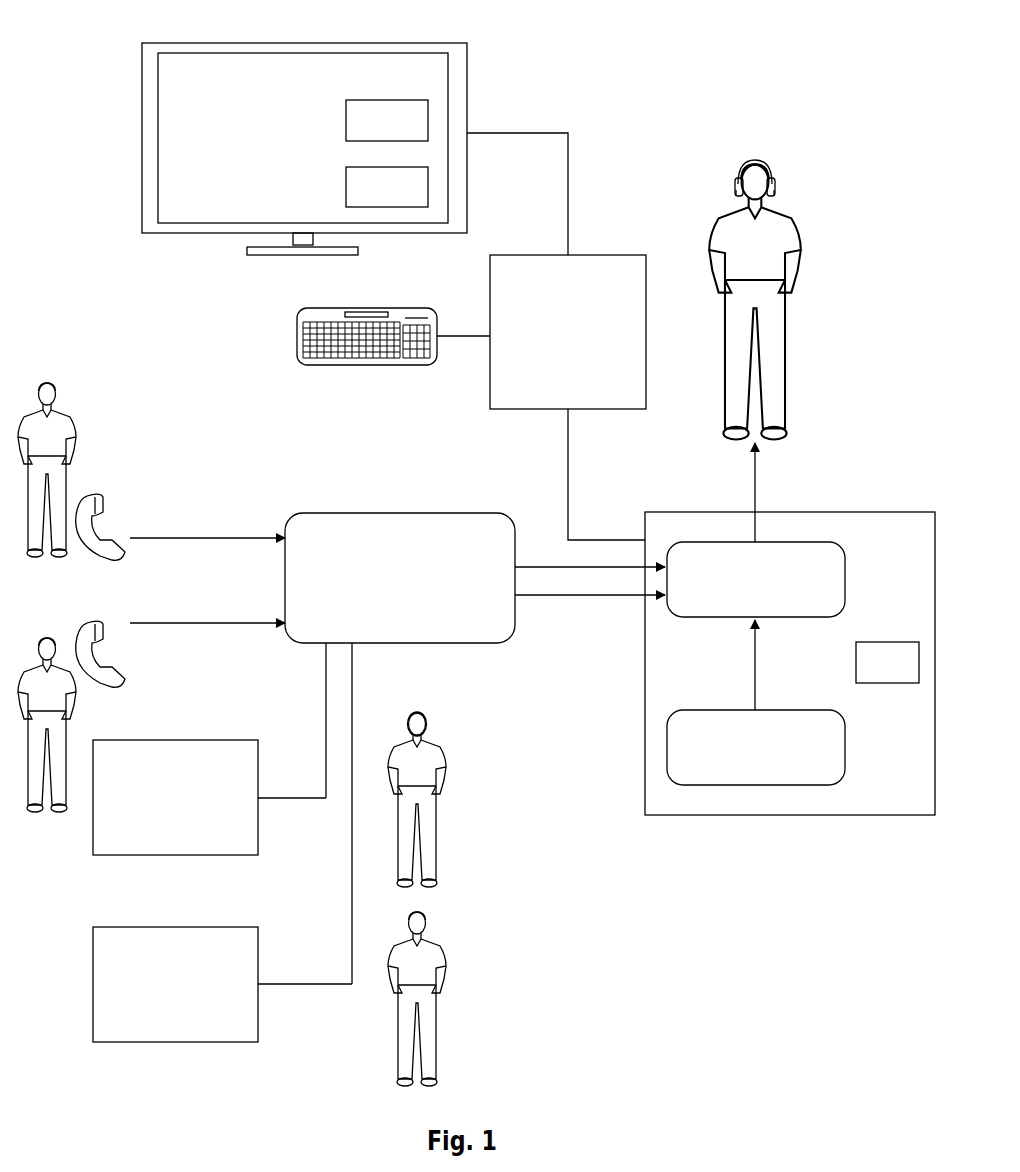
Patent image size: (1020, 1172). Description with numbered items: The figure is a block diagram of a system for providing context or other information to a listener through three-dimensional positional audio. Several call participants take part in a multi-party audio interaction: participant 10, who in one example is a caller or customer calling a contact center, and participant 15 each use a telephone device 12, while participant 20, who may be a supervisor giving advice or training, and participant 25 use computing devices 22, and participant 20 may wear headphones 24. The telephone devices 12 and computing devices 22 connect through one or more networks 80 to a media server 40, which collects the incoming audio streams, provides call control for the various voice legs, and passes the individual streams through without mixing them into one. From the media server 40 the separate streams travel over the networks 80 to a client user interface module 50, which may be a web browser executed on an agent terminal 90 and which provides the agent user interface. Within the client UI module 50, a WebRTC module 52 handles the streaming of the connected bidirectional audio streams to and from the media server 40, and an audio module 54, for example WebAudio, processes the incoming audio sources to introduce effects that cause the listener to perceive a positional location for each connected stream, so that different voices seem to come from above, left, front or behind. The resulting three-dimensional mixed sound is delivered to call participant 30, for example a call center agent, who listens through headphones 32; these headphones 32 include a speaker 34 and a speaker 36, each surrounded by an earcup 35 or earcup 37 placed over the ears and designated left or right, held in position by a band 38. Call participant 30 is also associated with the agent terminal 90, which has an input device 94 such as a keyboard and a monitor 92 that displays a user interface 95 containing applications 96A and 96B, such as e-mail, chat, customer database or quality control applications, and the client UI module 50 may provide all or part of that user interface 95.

The participant 10 is at (45, 383).
The telephone device 12 is at (102, 497).
The participant 15 is at (45, 638).
The participant 20 is at (447, 770).
The computing device 22 is at (222, 891).
The headphones 24 is at (428, 722).
The participant 25 is at (447, 970).
The call participant 30 is at (800, 250).
The headphones 32 is at (749, 160).
The speaker 34 is at (738, 193).
The earcup 35 is at (738, 181).
The speaker 36 is at (772, 193).
The earcup 37 is at (773, 181).
The band 38 is at (762, 160).
The media server 40 is at (335, 513).
The client user interface module 50 is at (790, 816).
The WebRTC module 52 is at (718, 620).
The audio module 54 is at (888, 642).
The network 80 is at (566, 460).
The agent terminal 90 is at (541, 255).
The monitor 92 is at (190, 43).
The input device 94 is at (350, 308).
The user interface 95 is at (303, 138).
The application 96A is at (387, 187).
The application 96B is at (387, 120).